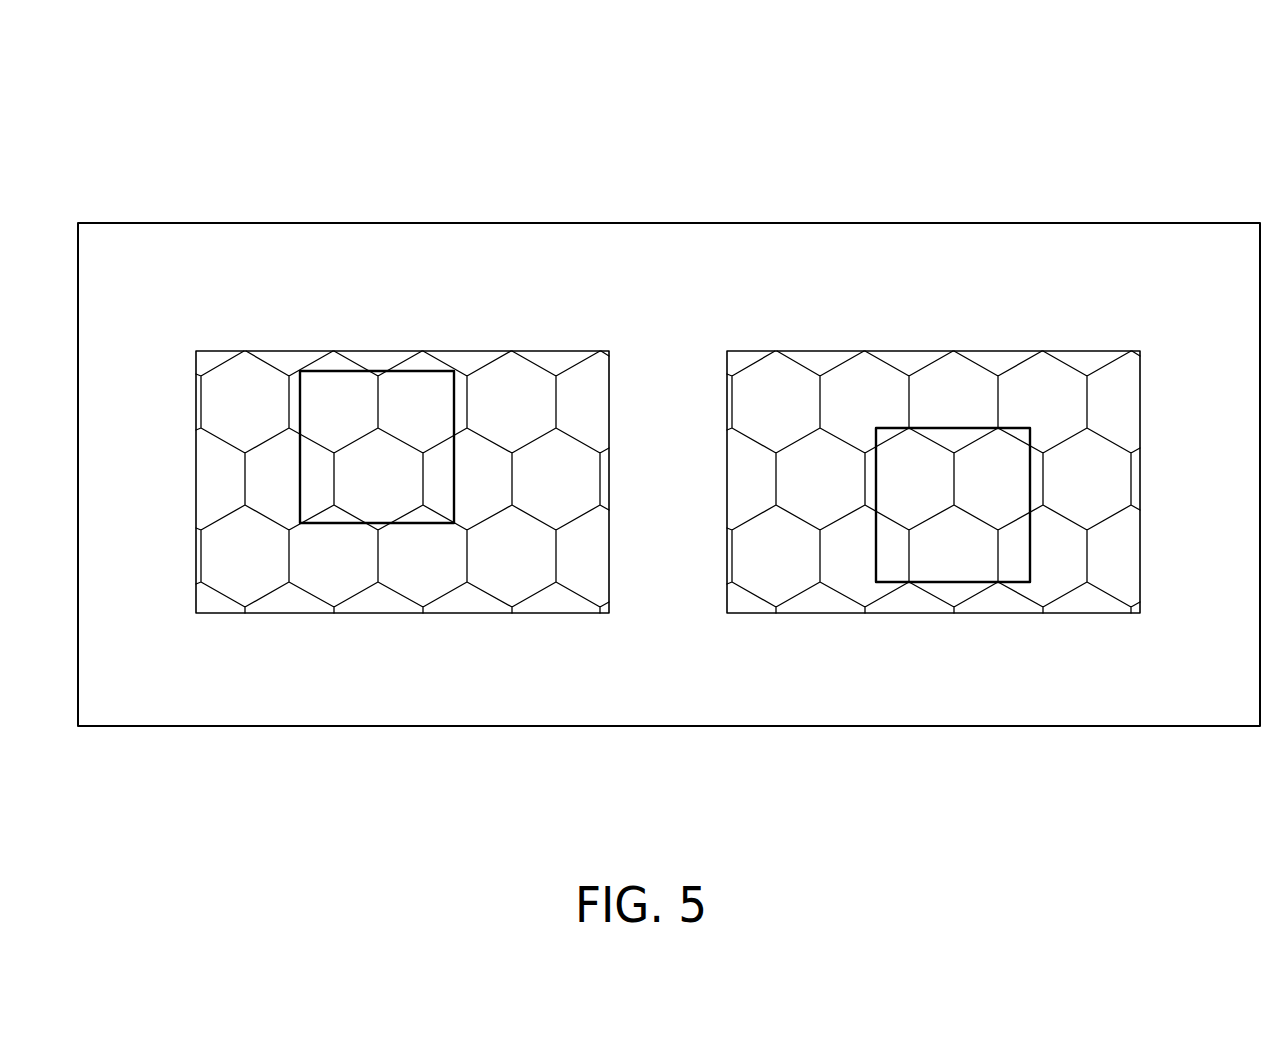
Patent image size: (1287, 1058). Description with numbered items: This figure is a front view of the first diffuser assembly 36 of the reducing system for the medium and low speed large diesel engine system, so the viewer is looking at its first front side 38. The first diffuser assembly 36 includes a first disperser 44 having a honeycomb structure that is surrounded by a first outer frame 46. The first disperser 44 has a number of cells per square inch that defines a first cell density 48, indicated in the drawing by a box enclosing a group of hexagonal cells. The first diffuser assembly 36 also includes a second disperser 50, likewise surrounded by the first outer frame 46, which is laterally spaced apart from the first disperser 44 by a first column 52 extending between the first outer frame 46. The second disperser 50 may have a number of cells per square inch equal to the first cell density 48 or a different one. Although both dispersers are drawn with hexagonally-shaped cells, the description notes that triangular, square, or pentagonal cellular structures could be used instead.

The first diffuser assembly 36 is at (976, 136).
The first front side 38 is at (338, 675).
The first disperser 44 is at (484, 365).
The first outer frame 46 is at (693, 300).
The first cell density 48 is at (375, 405).
The second disperser 50 is at (997, 403).
The first column 52 is at (653, 553).